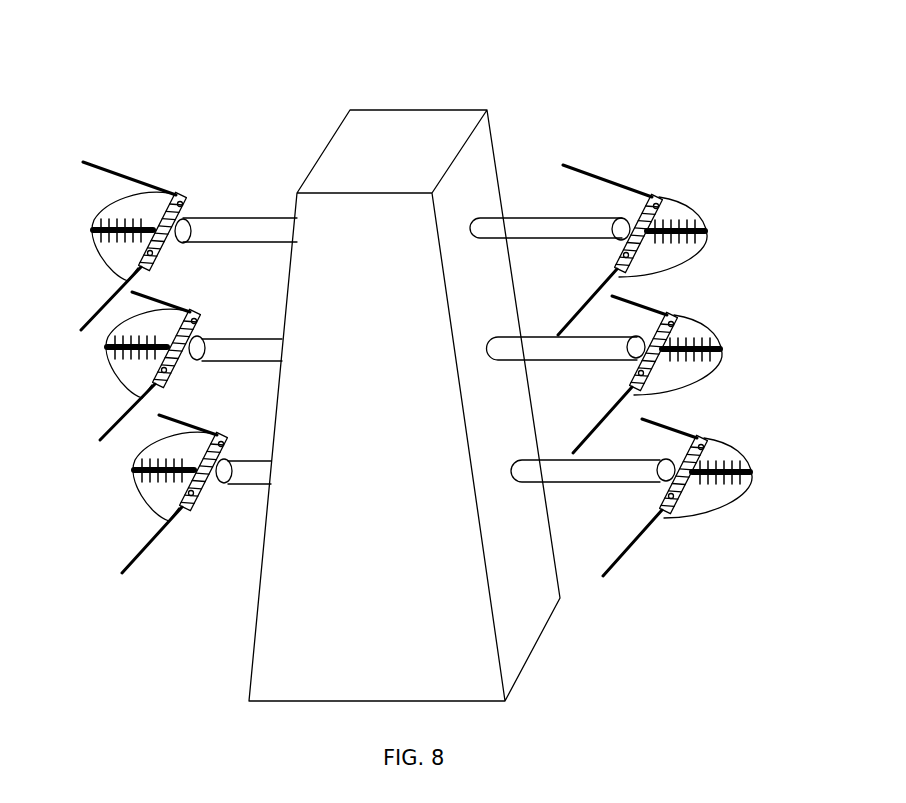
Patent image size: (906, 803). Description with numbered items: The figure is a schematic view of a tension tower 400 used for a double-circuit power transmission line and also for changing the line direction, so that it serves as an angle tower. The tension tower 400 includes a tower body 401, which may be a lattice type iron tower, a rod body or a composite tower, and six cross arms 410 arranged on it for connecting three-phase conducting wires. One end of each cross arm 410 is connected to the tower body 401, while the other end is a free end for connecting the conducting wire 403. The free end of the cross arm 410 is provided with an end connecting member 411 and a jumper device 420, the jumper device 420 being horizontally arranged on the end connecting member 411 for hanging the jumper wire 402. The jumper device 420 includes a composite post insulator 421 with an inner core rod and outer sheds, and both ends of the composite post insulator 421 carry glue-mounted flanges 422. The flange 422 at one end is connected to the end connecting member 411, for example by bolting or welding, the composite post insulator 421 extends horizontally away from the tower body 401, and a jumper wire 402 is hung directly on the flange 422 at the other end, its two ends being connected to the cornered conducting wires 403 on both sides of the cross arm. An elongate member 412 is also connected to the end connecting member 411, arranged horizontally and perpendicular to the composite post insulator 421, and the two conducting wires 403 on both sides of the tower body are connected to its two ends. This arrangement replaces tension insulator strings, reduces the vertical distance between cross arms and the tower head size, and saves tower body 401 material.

The tension tower 400 is at (422, 53).
The tower body 401 is at (364, 160).
The cross arm 410 is at (533, 228).
The end connecting member 411 is at (178, 220).
The elongate member 412 is at (145, 243).
The composite post insulator 421 is at (127, 200).
The jumper wire 402 is at (683, 193).
The conducting wire 403 is at (583, 168).
The jumper device 420 is at (707, 225).
The flange 422 is at (650, 245).